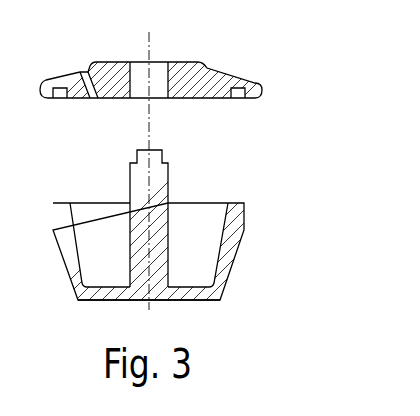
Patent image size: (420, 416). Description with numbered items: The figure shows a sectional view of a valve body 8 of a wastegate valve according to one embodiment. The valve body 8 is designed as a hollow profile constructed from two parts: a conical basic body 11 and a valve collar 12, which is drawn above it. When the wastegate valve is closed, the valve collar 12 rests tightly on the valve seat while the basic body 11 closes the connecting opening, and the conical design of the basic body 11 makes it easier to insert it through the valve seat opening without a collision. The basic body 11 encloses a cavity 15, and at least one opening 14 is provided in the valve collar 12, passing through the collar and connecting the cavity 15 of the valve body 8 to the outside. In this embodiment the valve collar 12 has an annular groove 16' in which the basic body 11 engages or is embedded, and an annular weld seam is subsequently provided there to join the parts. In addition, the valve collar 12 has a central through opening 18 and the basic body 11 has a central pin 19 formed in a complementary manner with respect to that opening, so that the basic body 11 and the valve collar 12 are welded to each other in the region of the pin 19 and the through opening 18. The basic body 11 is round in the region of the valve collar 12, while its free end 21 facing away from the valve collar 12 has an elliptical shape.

The valve body 8 is at (251, 107).
The basic body 11 is at (228, 250).
The valve collar 12 is at (218, 82).
The opening 14 is at (76, 67).
The cavity 15 is at (207, 249).
The annular groove 16' is at (133, 123).
The central through opening 18 is at (137, 70).
The central pin 19 is at (174, 185).
The free end 21 is at (203, 302).